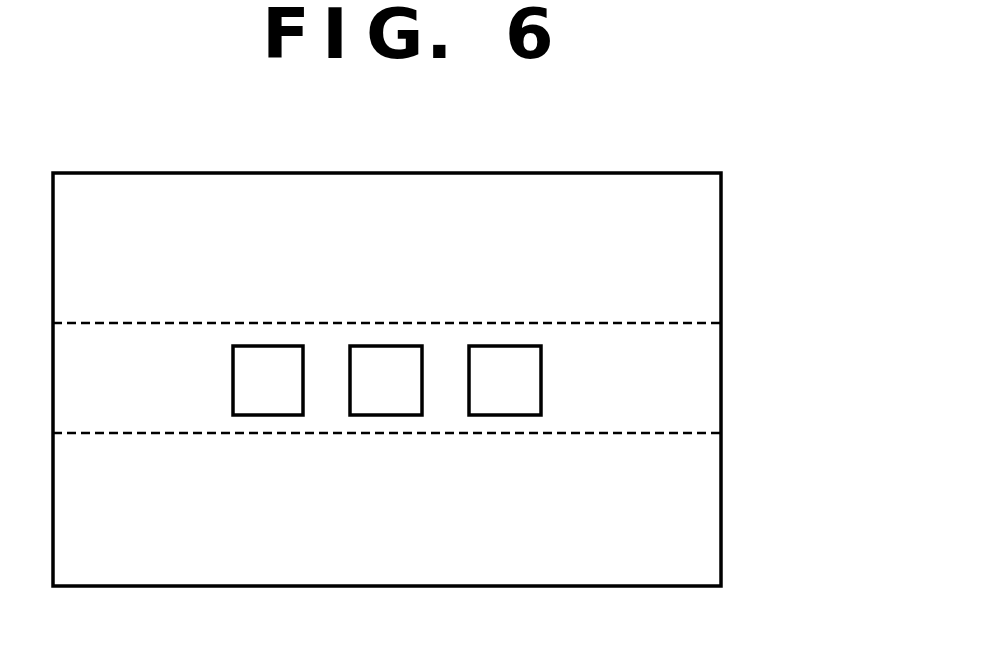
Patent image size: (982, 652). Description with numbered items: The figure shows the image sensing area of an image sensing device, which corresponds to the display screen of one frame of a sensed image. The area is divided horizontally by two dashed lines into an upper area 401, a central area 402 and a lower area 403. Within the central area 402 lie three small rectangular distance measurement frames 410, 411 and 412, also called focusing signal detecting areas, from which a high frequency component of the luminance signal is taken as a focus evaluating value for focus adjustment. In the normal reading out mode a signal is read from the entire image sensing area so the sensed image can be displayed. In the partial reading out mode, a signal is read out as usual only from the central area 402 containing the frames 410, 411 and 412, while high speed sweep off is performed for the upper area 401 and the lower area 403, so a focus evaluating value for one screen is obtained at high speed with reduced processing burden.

The upper area 401 is at (718, 243).
The central area 402 is at (718, 363).
The lower area 403 is at (718, 485).
The distance measurement frame 410 is at (247, 346).
The distance measurement frame 411 is at (366, 346).
The distance measurement frame 412 is at (483, 346).